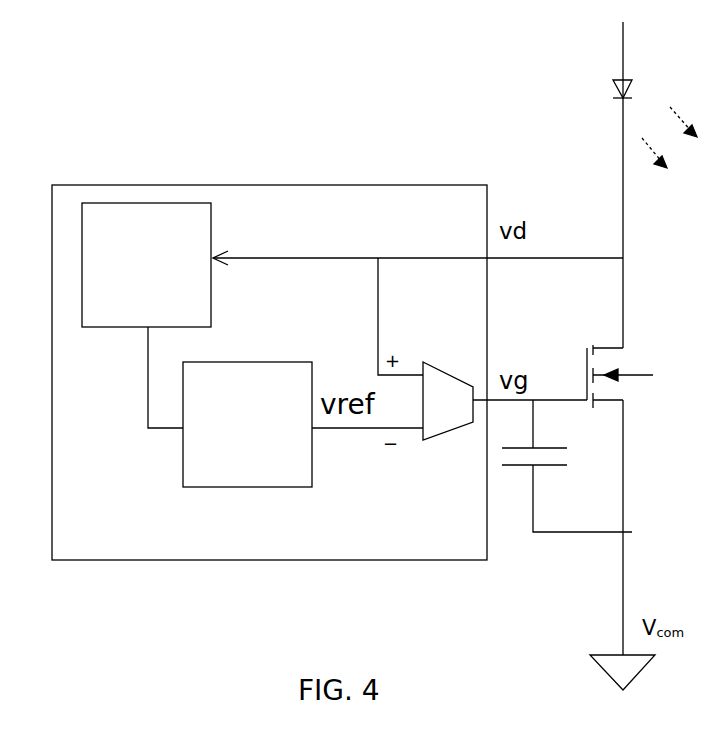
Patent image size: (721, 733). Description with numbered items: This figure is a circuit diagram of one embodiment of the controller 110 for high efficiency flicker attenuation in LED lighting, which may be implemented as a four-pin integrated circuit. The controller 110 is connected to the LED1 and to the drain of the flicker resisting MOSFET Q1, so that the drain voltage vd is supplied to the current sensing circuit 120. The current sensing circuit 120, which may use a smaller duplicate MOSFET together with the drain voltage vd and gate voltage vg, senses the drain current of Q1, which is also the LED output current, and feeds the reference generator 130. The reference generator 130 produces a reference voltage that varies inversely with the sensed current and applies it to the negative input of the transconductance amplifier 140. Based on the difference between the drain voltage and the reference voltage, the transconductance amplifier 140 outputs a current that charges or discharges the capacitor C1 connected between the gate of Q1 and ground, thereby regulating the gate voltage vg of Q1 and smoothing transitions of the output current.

The controller 110 is at (138, 155).
The current sensing circuit 120 is at (146, 265).
The reference generator 130 is at (247, 424).
The transconductance amplifier 140 is at (455, 376).
The flicker resisting MOSFET Q1 is at (605, 365).
The capacitor C1 is at (567, 466).
The LED LED1 is at (655, 185).